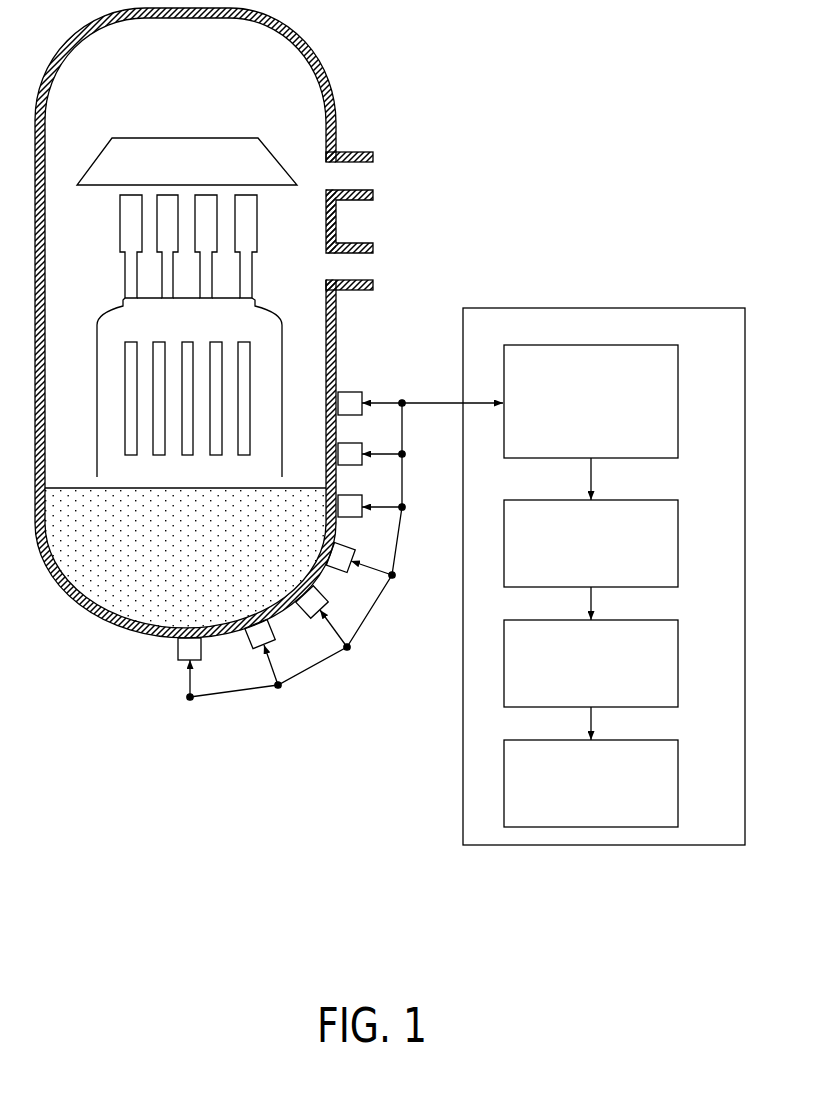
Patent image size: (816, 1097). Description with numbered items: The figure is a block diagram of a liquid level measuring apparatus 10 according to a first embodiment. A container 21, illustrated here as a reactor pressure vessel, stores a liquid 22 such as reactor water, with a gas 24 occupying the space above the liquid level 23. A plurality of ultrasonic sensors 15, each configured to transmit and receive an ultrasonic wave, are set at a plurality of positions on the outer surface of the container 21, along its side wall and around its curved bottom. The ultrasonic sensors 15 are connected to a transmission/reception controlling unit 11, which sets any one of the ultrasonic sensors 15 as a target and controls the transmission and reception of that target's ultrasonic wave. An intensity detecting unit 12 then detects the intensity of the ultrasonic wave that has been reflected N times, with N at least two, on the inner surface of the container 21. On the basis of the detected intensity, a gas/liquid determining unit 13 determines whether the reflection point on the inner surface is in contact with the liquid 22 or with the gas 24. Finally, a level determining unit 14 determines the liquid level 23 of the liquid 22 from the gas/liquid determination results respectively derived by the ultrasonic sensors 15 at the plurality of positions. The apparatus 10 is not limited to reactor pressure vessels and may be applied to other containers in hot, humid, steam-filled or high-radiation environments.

The liquid level measuring apparatus 10 is at (525, 243).
The transmission/reception controlling unit 11 is at (680, 400).
The intensity detecting unit 12 is at (680, 540).
The gas/liquid determining unit 13 is at (680, 658).
The level determining unit 14 is at (680, 778).
The ultrasonic sensors 15 is at (316, 527).
The container 21 is at (320, 70).
The liquid 22 is at (252, 559).
The liquid level 23 is at (287, 488).
The gas 24 is at (317, 358).